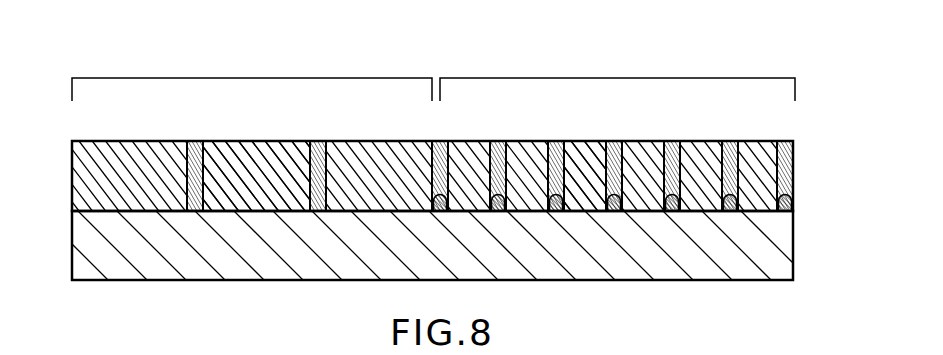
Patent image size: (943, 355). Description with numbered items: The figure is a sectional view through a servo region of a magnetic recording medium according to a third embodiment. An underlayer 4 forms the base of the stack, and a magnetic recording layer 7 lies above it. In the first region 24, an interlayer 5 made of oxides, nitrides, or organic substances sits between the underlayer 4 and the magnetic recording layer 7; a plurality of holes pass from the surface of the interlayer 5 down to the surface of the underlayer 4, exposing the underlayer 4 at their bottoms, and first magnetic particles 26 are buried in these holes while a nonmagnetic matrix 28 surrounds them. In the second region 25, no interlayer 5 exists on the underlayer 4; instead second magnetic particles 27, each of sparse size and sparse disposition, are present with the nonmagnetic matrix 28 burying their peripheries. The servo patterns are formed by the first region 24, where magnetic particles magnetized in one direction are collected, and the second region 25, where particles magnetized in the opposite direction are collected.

The underlayer 4 is at (785, 256).
The interlayer 5 is at (797, 205).
The magnetic recording layer 7 is at (797, 165).
The first region 24 is at (622, 78).
The second region 25 is at (251, 78).
The first magnetic particles 26 is at (585, 141).
The second magnetic particles 27 is at (253, 141).
The nonmagnetic matrix 28 is at (318, 141).